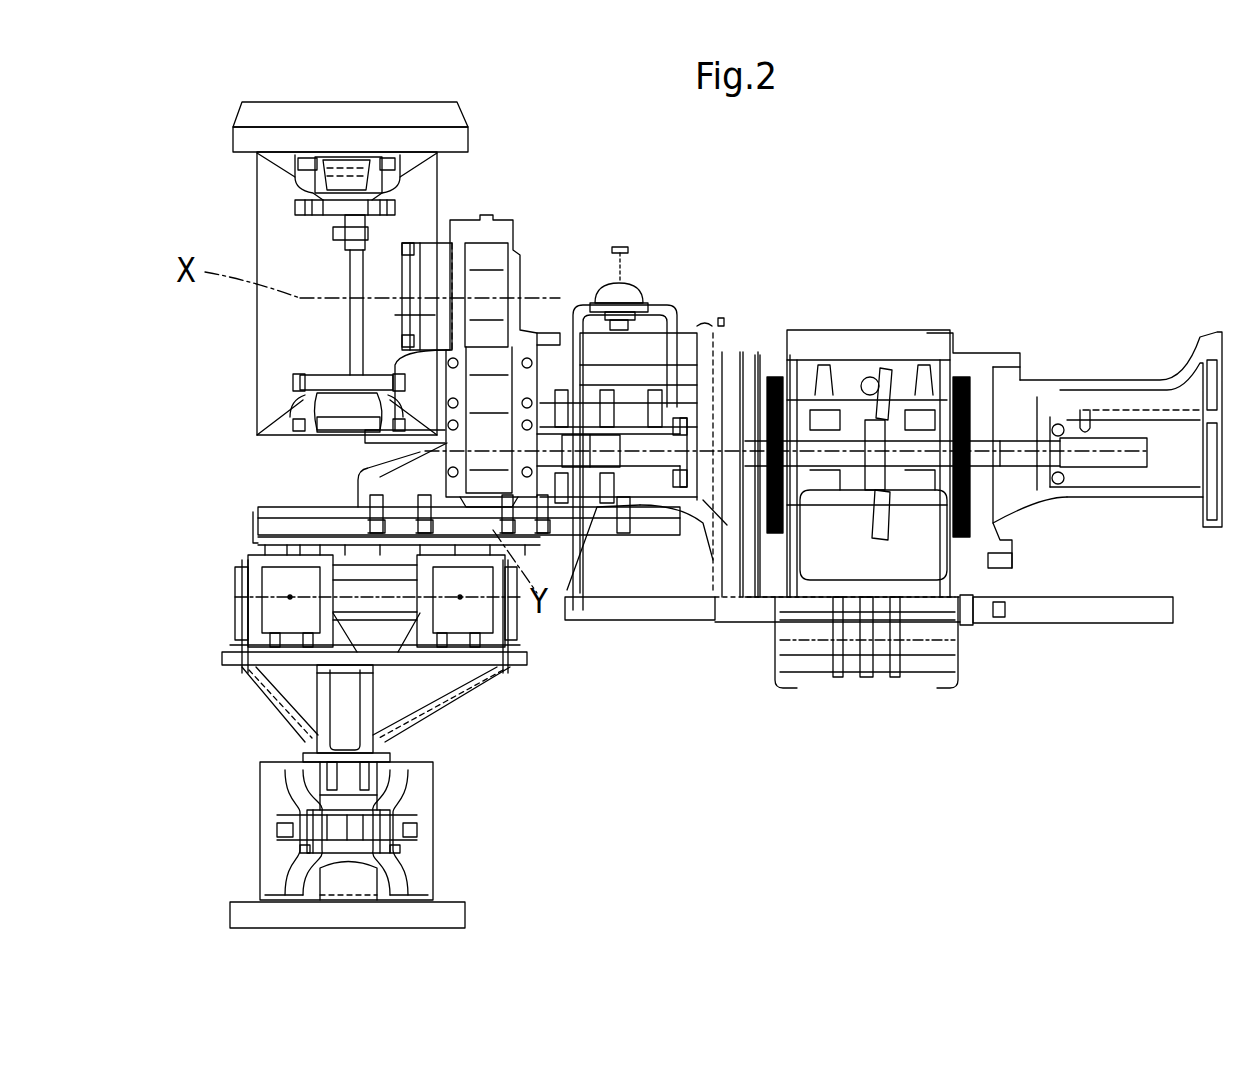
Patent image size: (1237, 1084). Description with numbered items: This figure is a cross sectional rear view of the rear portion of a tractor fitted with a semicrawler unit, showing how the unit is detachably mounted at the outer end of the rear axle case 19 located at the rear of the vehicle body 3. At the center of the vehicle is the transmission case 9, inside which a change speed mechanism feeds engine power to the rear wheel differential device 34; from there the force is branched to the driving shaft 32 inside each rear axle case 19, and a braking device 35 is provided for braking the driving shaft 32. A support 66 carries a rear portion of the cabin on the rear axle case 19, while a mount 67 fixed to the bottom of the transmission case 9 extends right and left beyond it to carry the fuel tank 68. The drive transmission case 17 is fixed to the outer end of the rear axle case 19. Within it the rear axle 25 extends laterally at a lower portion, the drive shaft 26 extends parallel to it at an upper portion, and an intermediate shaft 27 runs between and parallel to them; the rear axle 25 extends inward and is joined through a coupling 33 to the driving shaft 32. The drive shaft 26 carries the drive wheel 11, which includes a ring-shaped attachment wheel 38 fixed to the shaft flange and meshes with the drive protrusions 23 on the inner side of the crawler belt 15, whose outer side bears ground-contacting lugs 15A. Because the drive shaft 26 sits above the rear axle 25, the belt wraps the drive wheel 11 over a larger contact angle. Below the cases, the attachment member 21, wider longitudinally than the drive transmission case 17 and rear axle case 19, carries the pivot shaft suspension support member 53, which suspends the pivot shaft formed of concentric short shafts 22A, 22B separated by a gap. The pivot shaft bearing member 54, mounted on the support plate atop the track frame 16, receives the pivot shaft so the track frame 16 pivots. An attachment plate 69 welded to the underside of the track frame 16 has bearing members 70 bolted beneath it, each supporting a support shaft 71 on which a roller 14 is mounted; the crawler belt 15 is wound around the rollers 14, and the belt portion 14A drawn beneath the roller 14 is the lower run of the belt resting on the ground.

The vehicle body 3 is at (1033, 283).
The transmission case 9 is at (952, 335).
The drive wheel 11 is at (280, 413).
The rollers 14 is at (442, 787).
The lower rail 14A is at (423, 893).
The crawler belt 15 is at (462, 143).
The ground-contacting lugs 15A is at (450, 115).
The track frame 16 is at (318, 705).
The drive transmission case 17 is at (517, 240).
The rear axle case 19 is at (1108, 372).
The attachment member 21 is at (278, 507).
The short shaft 22A is at (290, 613).
The short shaft 22B is at (460, 610).
The drive protrusions 23 is at (333, 182).
The rear axle 25 is at (490, 443).
The drive shaft 26 is at (375, 277).
The intermediate shaft 27 is at (477, 380).
The driving shaft 32 is at (1092, 468).
The coupling 33 is at (618, 495).
The rear wheel differential device 34 is at (872, 360).
The braking device 35 is at (772, 353).
The attachment wheel 38 is at (323, 370).
The pivot shaft suspension support member 53 is at (250, 550).
The pivot shaft bearing member 54 is at (230, 645).
The support 66 is at (663, 303).
The mount 67 is at (1038, 625).
The fuel tank 68 is at (678, 340).
The attachment plate 69 is at (347, 763).
The bearing members 70 is at (347, 797).
The support shaft 71 is at (277, 832).